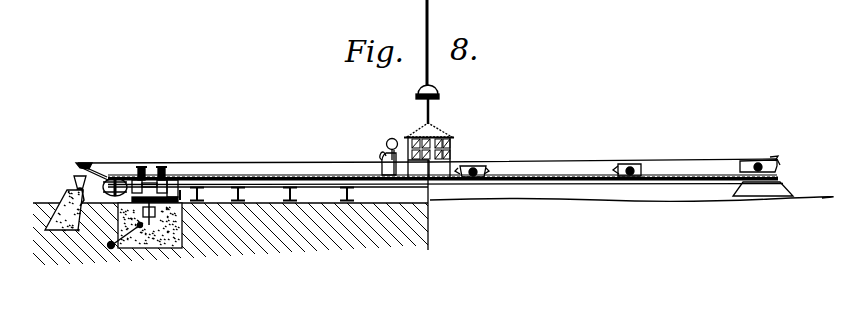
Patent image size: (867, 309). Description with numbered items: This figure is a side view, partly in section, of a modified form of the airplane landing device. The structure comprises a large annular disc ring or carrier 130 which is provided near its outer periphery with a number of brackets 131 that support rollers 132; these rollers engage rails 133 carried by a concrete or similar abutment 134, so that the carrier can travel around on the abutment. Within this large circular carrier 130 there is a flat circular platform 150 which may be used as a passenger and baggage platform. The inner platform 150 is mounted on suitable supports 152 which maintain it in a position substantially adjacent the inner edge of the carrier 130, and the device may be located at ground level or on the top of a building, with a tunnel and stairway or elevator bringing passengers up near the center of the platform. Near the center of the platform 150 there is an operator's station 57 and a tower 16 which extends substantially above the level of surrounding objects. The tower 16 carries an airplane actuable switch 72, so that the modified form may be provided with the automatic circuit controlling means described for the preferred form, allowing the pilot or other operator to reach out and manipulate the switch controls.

The tower 16 is at (431, 115).
The operator's station 57 is at (453, 144).
The airplane actuable switch 72 is at (440, 89).
The annular disc ring or carrier 130 is at (110, 180).
The brackets 131 is at (76, 167).
The rollers 132 is at (73, 183).
The rails 133 is at (85, 215).
The concrete abutment 134 is at (68, 210).
The flat circular platform 150 is at (266, 178).
The supports 152 is at (355, 194).